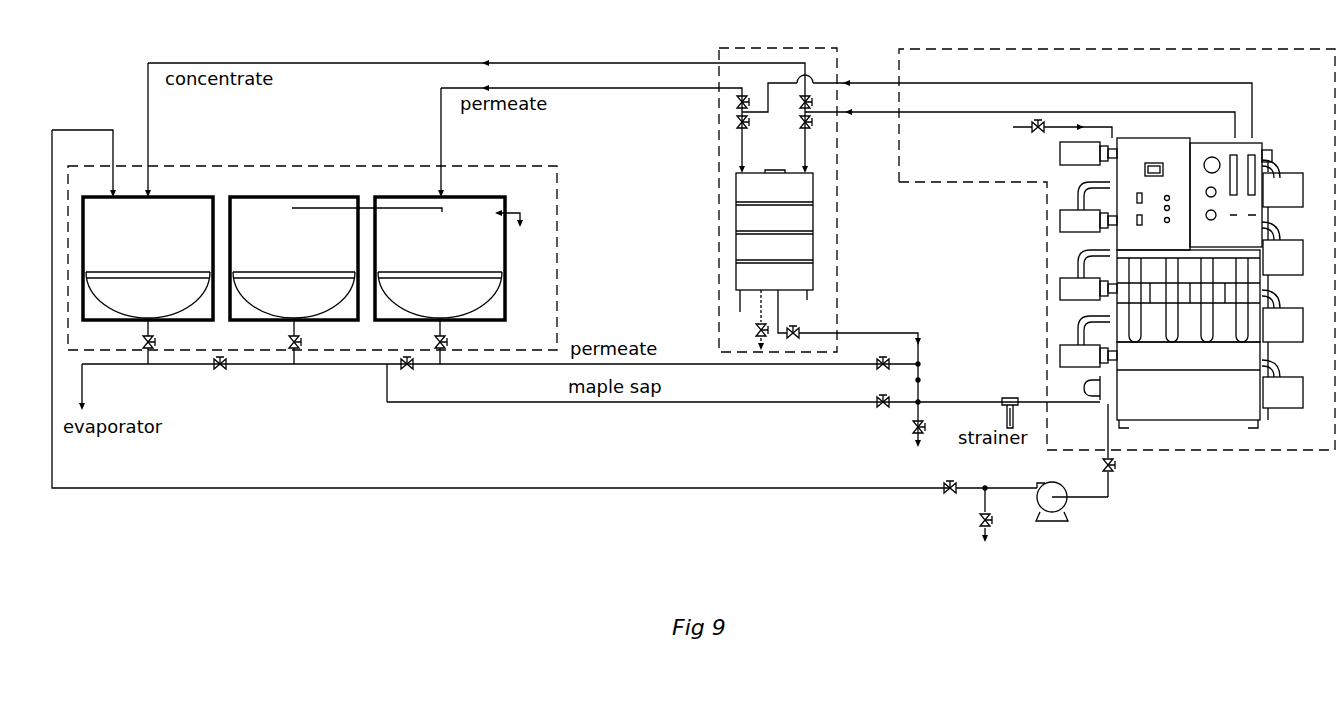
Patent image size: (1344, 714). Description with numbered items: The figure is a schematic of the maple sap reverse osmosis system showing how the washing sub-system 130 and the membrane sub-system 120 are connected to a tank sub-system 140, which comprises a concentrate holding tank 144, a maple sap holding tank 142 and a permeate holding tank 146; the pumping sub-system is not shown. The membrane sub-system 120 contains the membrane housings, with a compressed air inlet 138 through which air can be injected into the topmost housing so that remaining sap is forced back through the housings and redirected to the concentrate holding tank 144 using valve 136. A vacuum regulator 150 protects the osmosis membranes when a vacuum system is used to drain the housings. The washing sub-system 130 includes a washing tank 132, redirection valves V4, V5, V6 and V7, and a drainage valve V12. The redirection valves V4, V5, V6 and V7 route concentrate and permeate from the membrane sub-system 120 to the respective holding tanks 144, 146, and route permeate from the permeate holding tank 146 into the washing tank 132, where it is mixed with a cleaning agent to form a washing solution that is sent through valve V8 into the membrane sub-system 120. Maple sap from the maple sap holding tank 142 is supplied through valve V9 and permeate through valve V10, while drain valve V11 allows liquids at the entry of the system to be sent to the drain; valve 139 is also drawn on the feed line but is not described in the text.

The membrane sub-system 120 is at (975, 185).
The washing sub-system 130 is at (718, 187).
The washing tank 132 is at (774, 241).
The valve 136 is at (1118, 470).
The compressed air inlet 138 is at (1034, 134).
The valve 139 is at (940, 496).
The tank sub-system 140 is at (558, 203).
The maple sap holding tank 142 is at (294, 280).
The concentrate holding tank 144 is at (148, 280).
The permeate holding tank 146 is at (465, 280).
The vacuum regulator 150 is at (1072, 519).
The redirection valve V4 is at (753, 138).
The redirection valve V5 is at (751, 88).
The redirection valve V6 is at (815, 137).
The redirection valve V7 is at (799, 106).
The redirection valve V8 is at (849, 324).
The valve V9 is at (878, 389).
The valve V10 is at (879, 352).
The drain valve V11 is at (900, 440).
The drainage valve V12 is at (743, 320).